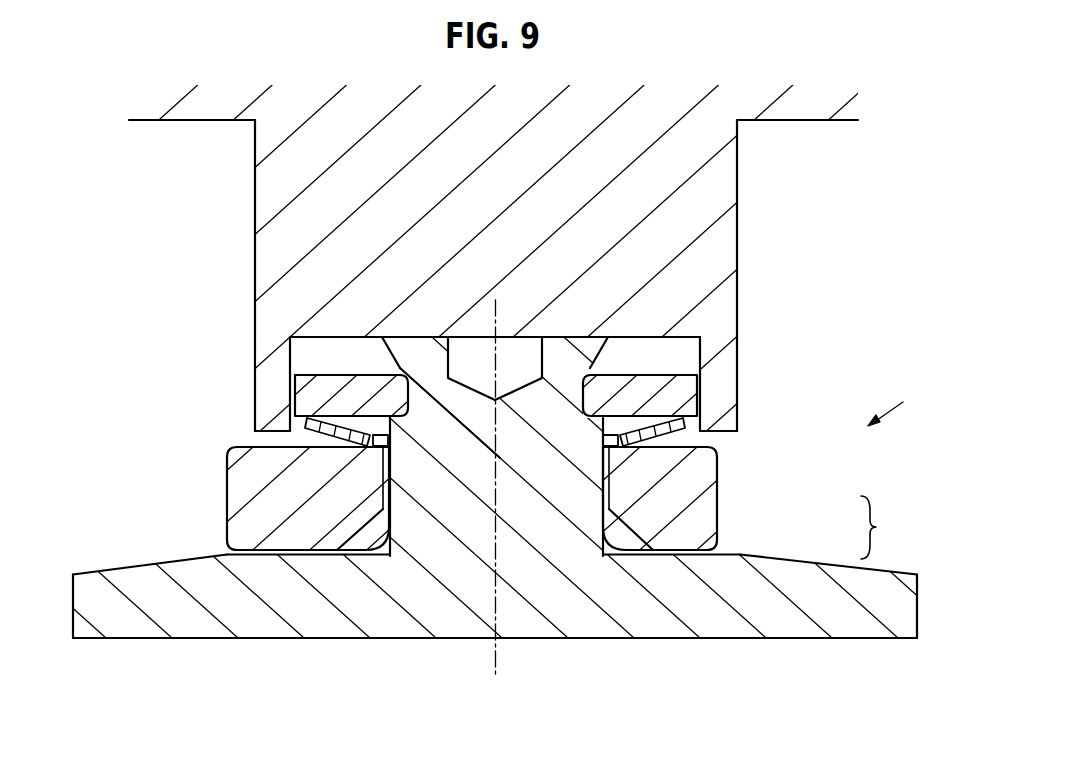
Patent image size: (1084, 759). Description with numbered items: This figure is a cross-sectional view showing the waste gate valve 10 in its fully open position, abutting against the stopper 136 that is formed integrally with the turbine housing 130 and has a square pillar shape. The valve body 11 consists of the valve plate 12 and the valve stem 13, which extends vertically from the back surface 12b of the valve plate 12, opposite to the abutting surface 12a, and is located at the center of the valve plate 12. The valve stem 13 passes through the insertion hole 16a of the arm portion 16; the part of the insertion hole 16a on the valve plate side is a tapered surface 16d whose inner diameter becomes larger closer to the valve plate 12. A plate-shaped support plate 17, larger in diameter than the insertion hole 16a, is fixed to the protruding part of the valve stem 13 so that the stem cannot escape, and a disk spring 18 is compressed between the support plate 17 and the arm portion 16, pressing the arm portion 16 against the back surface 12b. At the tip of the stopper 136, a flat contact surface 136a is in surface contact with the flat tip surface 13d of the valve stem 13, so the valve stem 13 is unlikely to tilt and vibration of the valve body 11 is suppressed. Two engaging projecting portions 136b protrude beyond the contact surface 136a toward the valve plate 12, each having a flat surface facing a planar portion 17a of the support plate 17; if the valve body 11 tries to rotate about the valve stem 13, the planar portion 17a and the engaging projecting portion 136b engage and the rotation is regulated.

The waste gate valve 10 is at (900, 407).
The valve body 11 is at (881, 527).
The valve plate 12 is at (786, 559).
The abutting surface 12a is at (213, 640).
The back surface 12b is at (119, 567).
The valve stem 13 is at (607, 495).
The tip surface 13d is at (562, 337).
The arm portion 16 is at (230, 497).
The insertion hole 16a is at (392, 505).
The tapered surface 16d is at (382, 512).
The support plate 17 is at (652, 370).
The planar portion 17a is at (294, 387).
The disk spring 18 is at (660, 445).
The turbine housing 130 is at (197, 123).
The stopper 136 is at (740, 243).
The contact surface 136a is at (290, 352).
The engaging projecting portion 136b is at (253, 420).